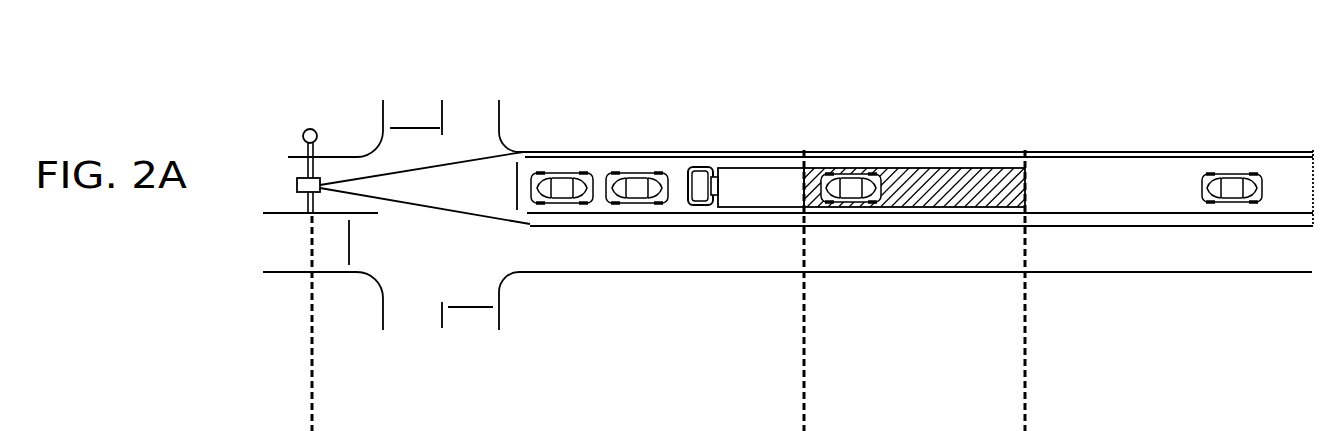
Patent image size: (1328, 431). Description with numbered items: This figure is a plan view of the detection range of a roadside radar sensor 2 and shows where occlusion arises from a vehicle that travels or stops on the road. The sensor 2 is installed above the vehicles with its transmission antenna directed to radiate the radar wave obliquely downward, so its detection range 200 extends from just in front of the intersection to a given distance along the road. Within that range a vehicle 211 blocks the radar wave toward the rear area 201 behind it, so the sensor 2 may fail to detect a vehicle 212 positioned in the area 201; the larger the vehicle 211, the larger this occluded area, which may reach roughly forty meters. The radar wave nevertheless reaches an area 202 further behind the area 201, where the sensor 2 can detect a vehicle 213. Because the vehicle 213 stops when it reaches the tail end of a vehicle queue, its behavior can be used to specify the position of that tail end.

The sensor 2 is at (296, 186).
The detection range 200 is at (448, 197).
The vehicle 211 is at (763, 185).
The rear area 201 is at (955, 187).
The vehicle 212 is at (852, 175).
The area 202 is at (1078, 187).
The vehicle 213 is at (1232, 177).